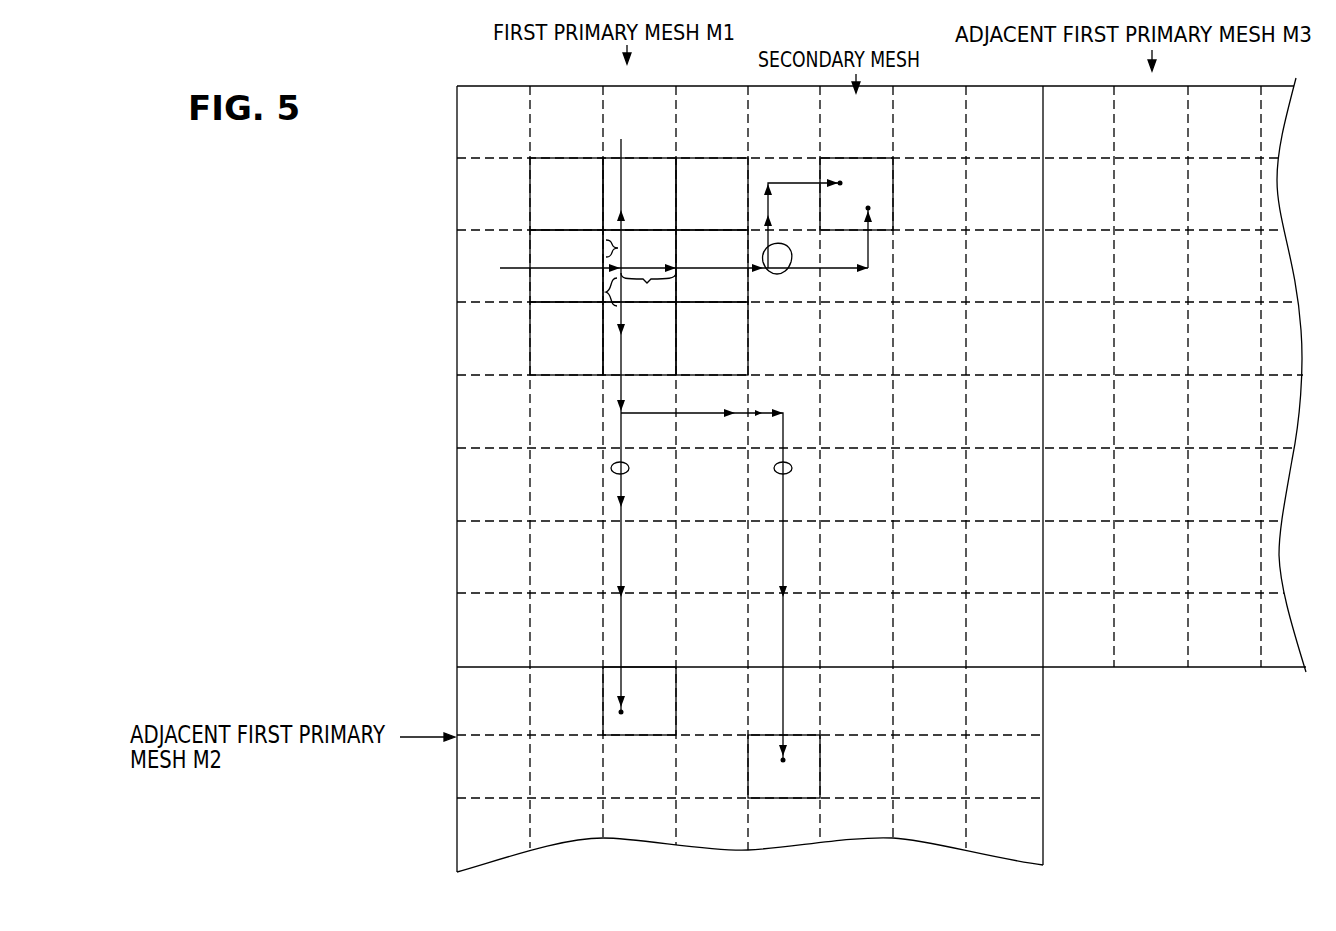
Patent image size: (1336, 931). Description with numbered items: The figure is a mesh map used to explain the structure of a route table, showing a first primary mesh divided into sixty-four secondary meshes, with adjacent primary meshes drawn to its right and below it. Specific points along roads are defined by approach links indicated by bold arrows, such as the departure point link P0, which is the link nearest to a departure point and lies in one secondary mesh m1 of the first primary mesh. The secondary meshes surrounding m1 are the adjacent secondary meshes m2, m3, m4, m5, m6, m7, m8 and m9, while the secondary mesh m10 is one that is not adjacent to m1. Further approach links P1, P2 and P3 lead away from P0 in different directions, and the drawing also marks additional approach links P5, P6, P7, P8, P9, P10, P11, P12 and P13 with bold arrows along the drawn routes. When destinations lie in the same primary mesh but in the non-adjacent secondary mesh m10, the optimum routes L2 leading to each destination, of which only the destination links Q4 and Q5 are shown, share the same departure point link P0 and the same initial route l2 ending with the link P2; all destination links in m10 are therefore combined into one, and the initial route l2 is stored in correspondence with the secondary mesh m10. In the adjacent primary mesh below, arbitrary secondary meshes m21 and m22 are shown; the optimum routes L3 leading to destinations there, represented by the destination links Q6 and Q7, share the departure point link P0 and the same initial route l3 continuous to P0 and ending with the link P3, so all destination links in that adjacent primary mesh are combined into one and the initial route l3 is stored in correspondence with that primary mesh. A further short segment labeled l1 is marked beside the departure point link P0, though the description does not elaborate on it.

The secondary mesh m1 is at (639, 266).
The adjacent secondary mesh m2 is at (566, 194).
The adjacent secondary mesh m3 is at (639, 194).
The adjacent secondary mesh m4 is at (712, 194).
The adjacent secondary mesh m5 is at (712, 266).
The adjacent secondary mesh m6 is at (712, 338).
The adjacent secondary mesh m7 is at (639, 338).
The adjacent secondary mesh m8 is at (566, 338).
The adjacent secondary mesh m9 is at (566, 266).
The non-adjacent secondary mesh m10 is at (856, 194).
The secondary mesh of adjacent primary mesh m21 is at (639, 701).
The secondary mesh of adjacent primary mesh m22 is at (784, 766).
The departure point link P0 is at (608, 252).
The approach link P1 is at (633, 217).
The approach link P2 is at (664, 283).
The approach link P3 is at (633, 341).
The point P5 is at (766, 281).
The point P6 is at (857, 281).
The point P7 is at (772, 192).
The point P8 is at (633, 397).
The point P9 is at (633, 499).
The point P10 is at (636, 582).
The point P11 is at (738, 398).
The point P12 is at (782, 398).
The point P13 is at (797, 582).
The destination link Q4 is at (837, 194).
The destination link Q5 is at (878, 203).
The destination link Q6 is at (633, 710).
The destination link Q7 is at (789, 768).
The distance l1 is at (626, 249).
The initial route l2 is at (648, 289).
The initial route l3 is at (607, 292).
The optimum route L2 is at (789, 270).
The optimum route L3 is at (777, 470).